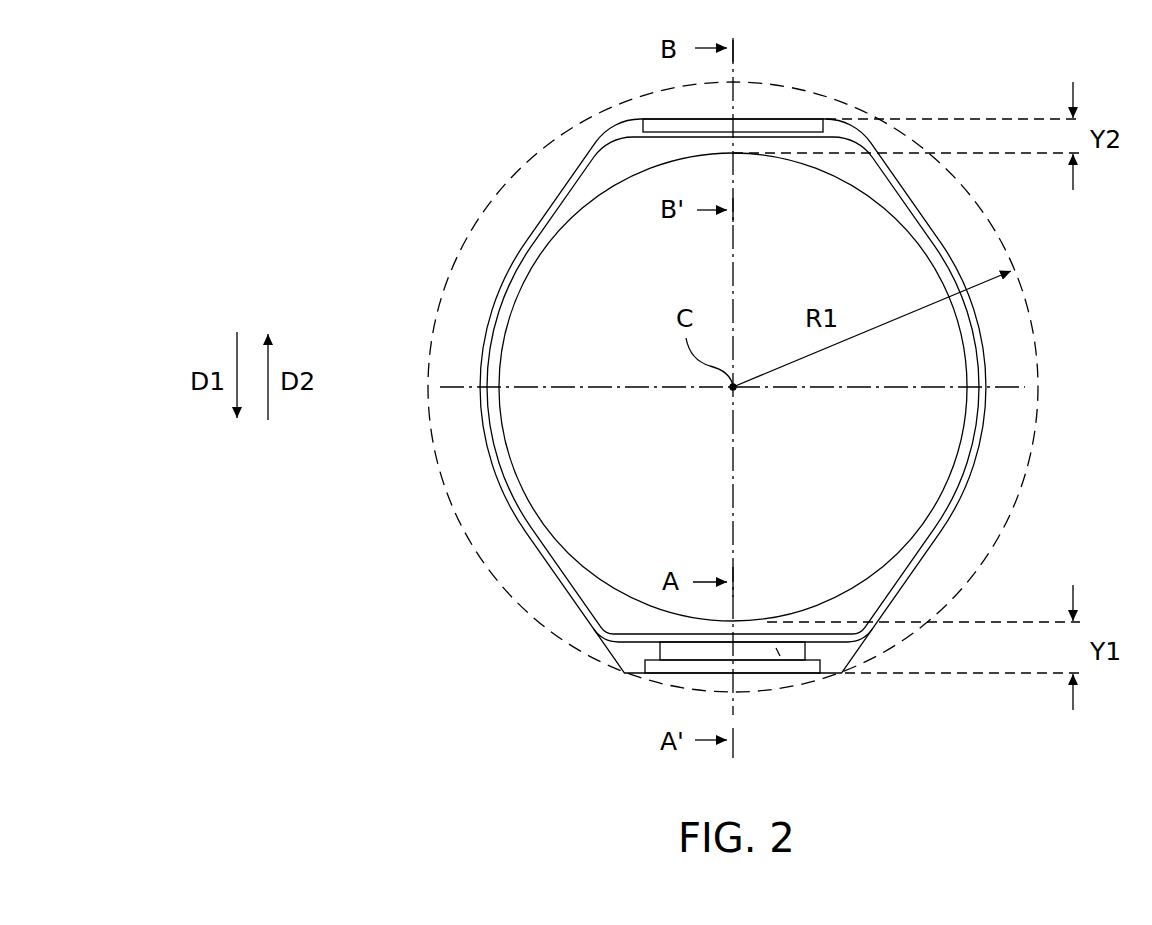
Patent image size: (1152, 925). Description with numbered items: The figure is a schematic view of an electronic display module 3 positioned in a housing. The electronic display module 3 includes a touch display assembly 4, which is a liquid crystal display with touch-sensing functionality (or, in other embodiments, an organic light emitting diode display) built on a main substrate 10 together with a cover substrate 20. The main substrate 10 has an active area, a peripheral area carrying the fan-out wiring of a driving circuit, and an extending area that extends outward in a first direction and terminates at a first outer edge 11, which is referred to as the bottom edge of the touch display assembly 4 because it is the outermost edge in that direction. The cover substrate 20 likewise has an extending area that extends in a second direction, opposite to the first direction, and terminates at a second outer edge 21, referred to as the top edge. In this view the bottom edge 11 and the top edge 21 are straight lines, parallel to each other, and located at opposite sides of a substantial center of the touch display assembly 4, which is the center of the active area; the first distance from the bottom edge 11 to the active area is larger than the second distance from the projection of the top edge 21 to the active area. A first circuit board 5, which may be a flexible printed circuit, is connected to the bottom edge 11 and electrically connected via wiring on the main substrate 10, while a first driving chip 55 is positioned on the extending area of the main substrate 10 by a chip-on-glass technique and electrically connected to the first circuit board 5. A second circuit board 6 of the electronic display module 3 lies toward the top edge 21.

The electronic display module 3 is at (444, 125).
The touch display assembly 4 is at (471, 336).
The first circuit board 5 is at (661, 664).
The second circuit board 6 is at (682, 129).
The main substrate 10 is at (599, 649).
The first outer edge 11 is at (690, 676).
The cover substrate 20 is at (580, 150).
The second outer edge 21 is at (788, 118).
The first driving chip 55 is at (780, 654).